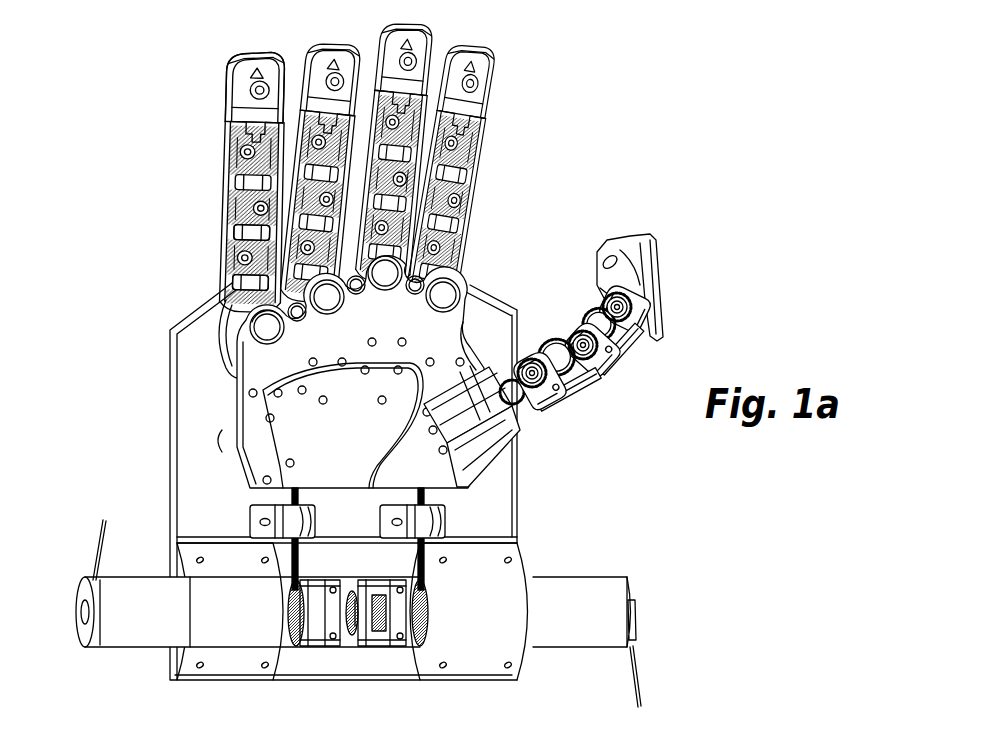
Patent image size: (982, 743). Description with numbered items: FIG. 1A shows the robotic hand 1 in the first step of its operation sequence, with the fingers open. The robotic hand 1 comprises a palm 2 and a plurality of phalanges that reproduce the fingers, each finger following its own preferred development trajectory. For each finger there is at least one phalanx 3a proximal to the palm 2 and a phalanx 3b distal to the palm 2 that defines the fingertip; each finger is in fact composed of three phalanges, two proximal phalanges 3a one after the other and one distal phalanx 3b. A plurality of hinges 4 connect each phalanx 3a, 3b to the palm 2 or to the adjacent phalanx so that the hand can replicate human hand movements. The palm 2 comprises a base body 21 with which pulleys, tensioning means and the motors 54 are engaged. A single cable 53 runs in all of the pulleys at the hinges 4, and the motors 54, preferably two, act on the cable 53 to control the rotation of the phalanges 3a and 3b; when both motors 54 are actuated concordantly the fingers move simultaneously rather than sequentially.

The robotic hand 1 is at (702, 145).
The palm 2 is at (165, 383).
The proximal phalanx 3a is at (212, 175).
The distal phalanx 3b is at (232, 80).
The hinge 4 is at (228, 210).
The base body 21 is at (510, 300).
The cable 53 is at (417, 562).
The motor 54 is at (575, 572).